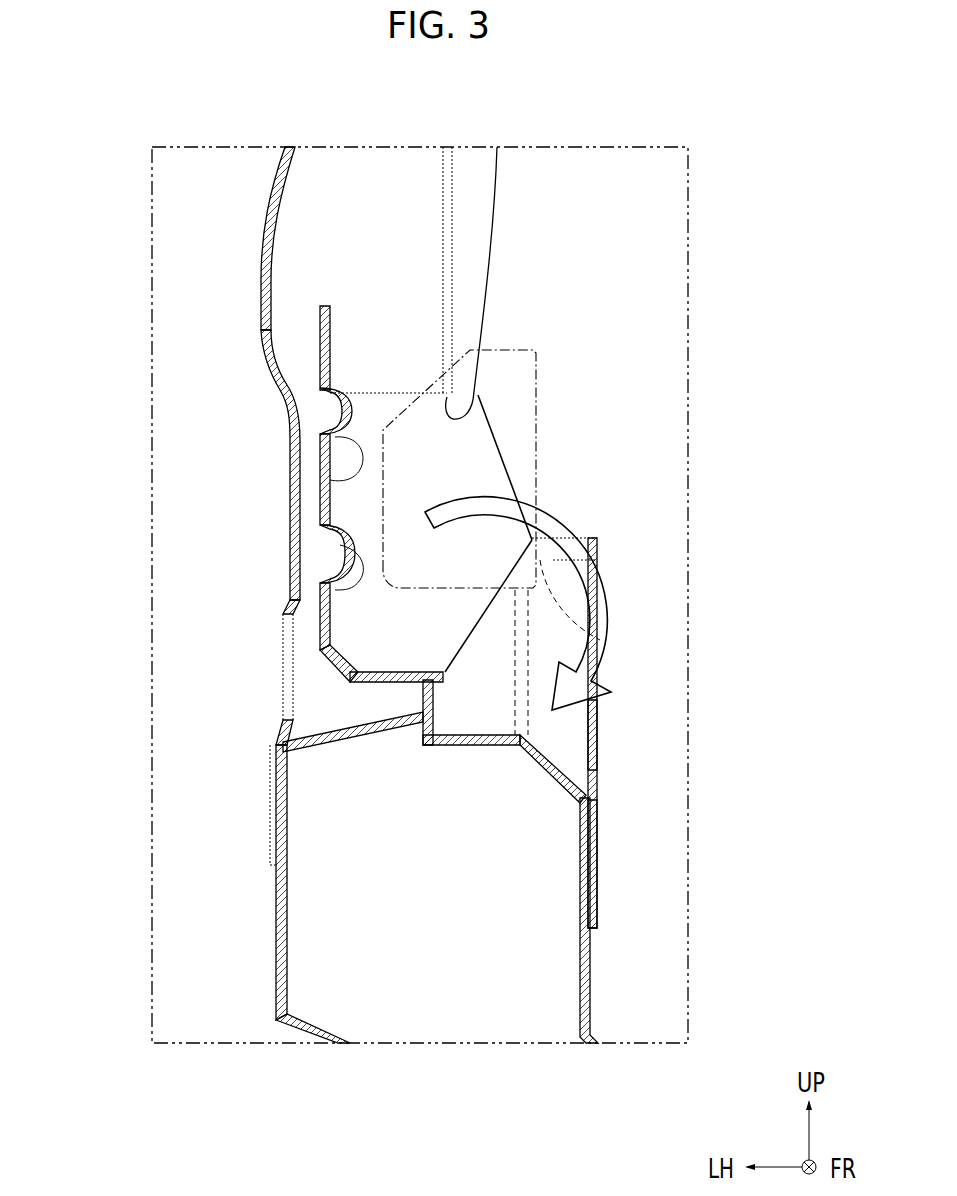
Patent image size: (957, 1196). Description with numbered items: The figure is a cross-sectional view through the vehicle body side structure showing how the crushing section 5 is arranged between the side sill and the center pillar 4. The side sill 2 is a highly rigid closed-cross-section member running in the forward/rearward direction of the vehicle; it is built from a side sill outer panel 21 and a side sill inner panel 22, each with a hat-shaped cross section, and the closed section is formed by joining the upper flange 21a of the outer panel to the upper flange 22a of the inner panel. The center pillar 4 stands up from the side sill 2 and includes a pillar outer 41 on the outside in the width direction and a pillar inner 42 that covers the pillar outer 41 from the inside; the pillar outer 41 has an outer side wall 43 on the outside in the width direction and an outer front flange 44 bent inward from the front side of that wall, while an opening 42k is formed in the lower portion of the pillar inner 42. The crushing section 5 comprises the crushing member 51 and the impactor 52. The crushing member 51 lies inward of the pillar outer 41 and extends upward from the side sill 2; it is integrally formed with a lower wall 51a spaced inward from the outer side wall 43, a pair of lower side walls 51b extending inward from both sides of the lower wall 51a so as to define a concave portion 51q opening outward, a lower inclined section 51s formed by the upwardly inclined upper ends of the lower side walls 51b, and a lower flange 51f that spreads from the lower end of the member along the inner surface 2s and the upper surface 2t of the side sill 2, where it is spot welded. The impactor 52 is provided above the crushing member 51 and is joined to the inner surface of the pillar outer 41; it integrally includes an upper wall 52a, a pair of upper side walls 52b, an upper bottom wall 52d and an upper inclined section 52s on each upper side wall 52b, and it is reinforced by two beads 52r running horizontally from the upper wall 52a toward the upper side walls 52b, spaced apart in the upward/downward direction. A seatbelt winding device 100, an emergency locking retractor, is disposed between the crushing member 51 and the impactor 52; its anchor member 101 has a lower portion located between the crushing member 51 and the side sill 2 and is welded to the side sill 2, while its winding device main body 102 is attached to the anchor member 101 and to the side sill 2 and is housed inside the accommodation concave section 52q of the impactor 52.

The side sill 2 is at (605, 984).
The inner surface 2s is at (597, 930).
The upper surface 2t is at (487, 730).
The side sill outer panel 21 is at (275, 935).
The upper flange 21a is at (420, 707).
The side sill inner panel 22 is at (597, 1007).
The upper flange 22a is at (455, 712).
The center pillar 4 is at (255, 200).
The pillar outer 41 is at (258, 278).
The pillar inner 42 is at (457, 280).
The opening 42k is at (478, 403).
The outer side wall 43 is at (263, 352).
The outer front flange 44 is at (367, 190).
The crushing section 5 is at (498, 435).
The crushing member 51 is at (590, 697).
The lower wall 51a is at (590, 735).
The lower side walls 51b is at (553, 560).
The lower flange 51f is at (597, 852).
The concave portion 51q is at (513, 707).
The lower inclined section 51s is at (473, 630).
The impactor 52 is at (500, 490).
The upper wall 52a is at (320, 493).
The upper side walls 52b is at (367, 417).
The upper bottom wall 52d is at (360, 645).
The accommodation concave section 52q is at (358, 478).
The beads 52r is at (350, 470).
The upper inclined section 52s is at (600, 640).
The seatbelt winding device 100 is at (548, 442).
The anchor member 101 is at (548, 700).
The winding device main body 102 is at (565, 488).